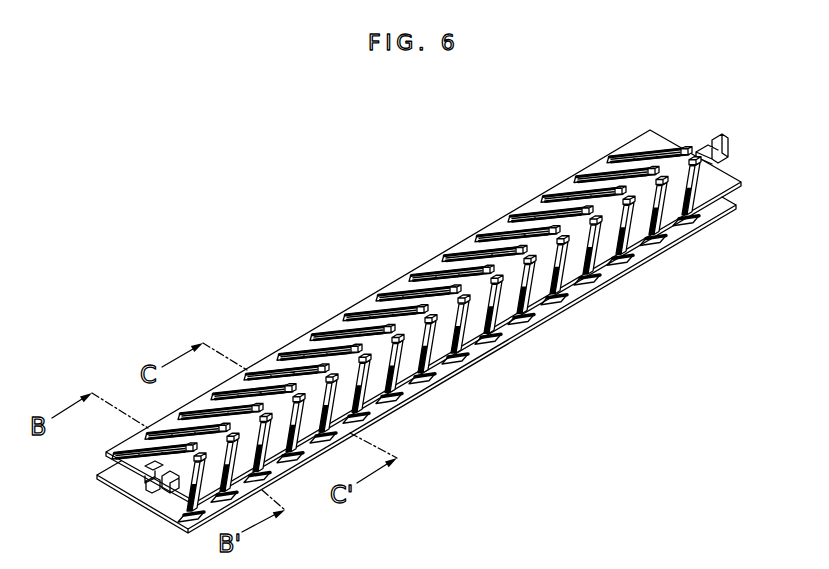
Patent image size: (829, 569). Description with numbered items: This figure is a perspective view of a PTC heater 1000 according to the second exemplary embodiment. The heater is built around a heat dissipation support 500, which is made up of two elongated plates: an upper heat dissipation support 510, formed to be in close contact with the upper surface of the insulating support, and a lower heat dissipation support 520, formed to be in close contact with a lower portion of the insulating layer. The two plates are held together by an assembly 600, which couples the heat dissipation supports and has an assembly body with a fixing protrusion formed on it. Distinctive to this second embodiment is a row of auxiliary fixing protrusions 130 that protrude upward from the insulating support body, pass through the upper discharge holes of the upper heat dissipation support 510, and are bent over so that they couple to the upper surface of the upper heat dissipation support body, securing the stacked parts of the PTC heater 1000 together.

The PTC heater 1000 is at (443, 331).
The heat dissipation support 500 is at (443, 331).
The upper heat dissipation support 510 is at (709, 182).
The lower heat dissipation support 520 is at (651, 250).
The auxiliary fixing protrusion 130 is at (437, 327).
The assembly 600 is at (401, 347).